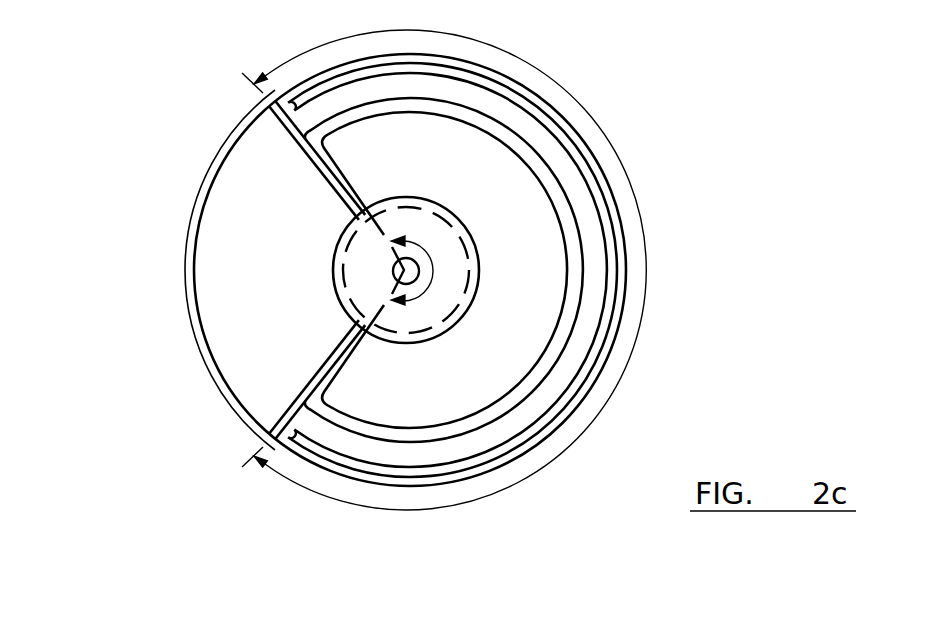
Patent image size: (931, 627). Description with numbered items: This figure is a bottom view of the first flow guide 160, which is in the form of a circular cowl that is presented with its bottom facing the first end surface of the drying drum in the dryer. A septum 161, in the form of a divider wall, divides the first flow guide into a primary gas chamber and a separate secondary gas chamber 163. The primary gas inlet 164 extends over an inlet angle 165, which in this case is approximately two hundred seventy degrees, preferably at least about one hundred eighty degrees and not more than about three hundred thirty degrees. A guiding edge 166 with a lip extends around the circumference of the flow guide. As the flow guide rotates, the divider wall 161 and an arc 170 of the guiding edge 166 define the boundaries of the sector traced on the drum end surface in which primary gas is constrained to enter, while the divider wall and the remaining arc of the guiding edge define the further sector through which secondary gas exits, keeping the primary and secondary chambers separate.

The first flow guide 160 is at (614, 100).
The septum 161 is at (310, 163).
The secondary gas chamber 163 is at (277, 302).
The primary gas inlet 164 is at (525, 275).
The inlet angle 165 is at (437, 261).
The guiding edge 166 is at (190, 253).
The arc of the guiding edge 170 is at (641, 357).